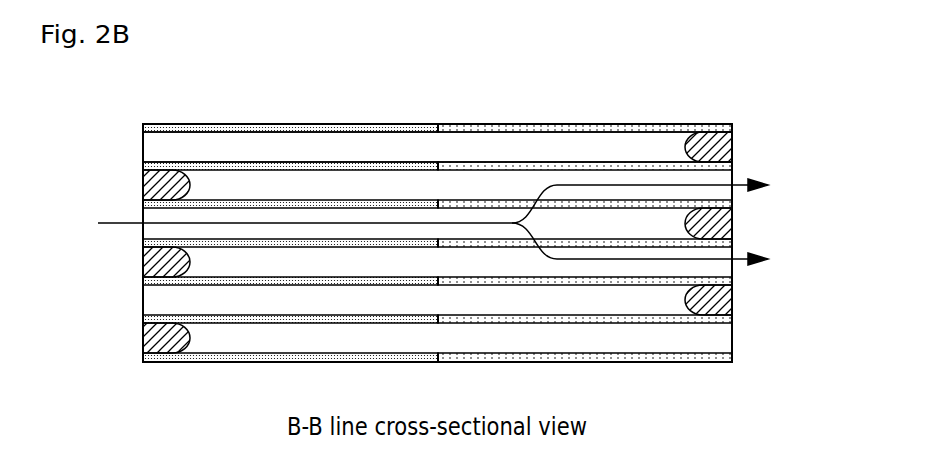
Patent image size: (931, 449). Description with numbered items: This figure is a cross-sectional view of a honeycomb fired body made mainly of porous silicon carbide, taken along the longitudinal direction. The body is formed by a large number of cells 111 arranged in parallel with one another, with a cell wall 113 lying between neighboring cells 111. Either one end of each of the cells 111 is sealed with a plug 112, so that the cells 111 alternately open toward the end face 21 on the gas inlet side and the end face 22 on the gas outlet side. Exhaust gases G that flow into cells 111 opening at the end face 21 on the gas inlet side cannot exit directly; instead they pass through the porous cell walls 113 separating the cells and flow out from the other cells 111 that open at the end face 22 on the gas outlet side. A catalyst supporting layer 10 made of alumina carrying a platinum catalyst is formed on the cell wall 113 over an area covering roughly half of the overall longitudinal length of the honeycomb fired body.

The catalyst supporting layer 10 is at (261, 127).
The cells 111 is at (155, 147).
The plug 112 is at (712, 140).
The cell wall 113 is at (481, 130).
The end face on the gas inlet side 21 is at (142, 307).
The end face on the gas outlet side 22 is at (732, 270).
The exhaust gases G is at (425, 222).